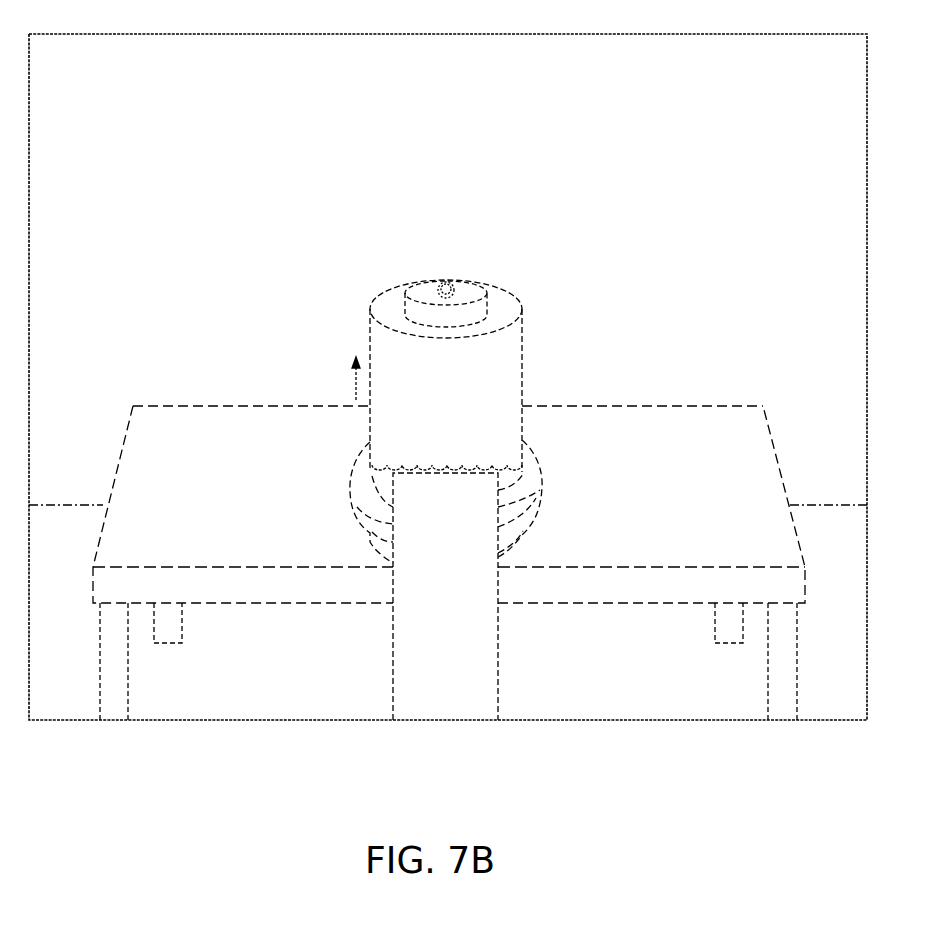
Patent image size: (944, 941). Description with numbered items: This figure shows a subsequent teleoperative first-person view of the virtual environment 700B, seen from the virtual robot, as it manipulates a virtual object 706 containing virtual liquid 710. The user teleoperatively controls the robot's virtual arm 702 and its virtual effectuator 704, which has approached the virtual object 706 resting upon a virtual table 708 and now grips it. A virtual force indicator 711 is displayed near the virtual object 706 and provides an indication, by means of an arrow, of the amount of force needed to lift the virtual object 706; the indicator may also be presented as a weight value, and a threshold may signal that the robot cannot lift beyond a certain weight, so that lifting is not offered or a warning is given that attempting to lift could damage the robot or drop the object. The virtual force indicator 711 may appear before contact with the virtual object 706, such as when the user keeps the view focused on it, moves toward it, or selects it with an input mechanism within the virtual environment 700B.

The virtual environment 700B is at (838, 90).
The virtual arm 702 is at (490, 668).
The virtual effectuator 704 is at (533, 488).
The virtual object 706 is at (513, 352).
The virtual table 708 is at (721, 419).
The virtual liquid 710 is at (392, 466).
The virtual force indicator 711 is at (355, 383).